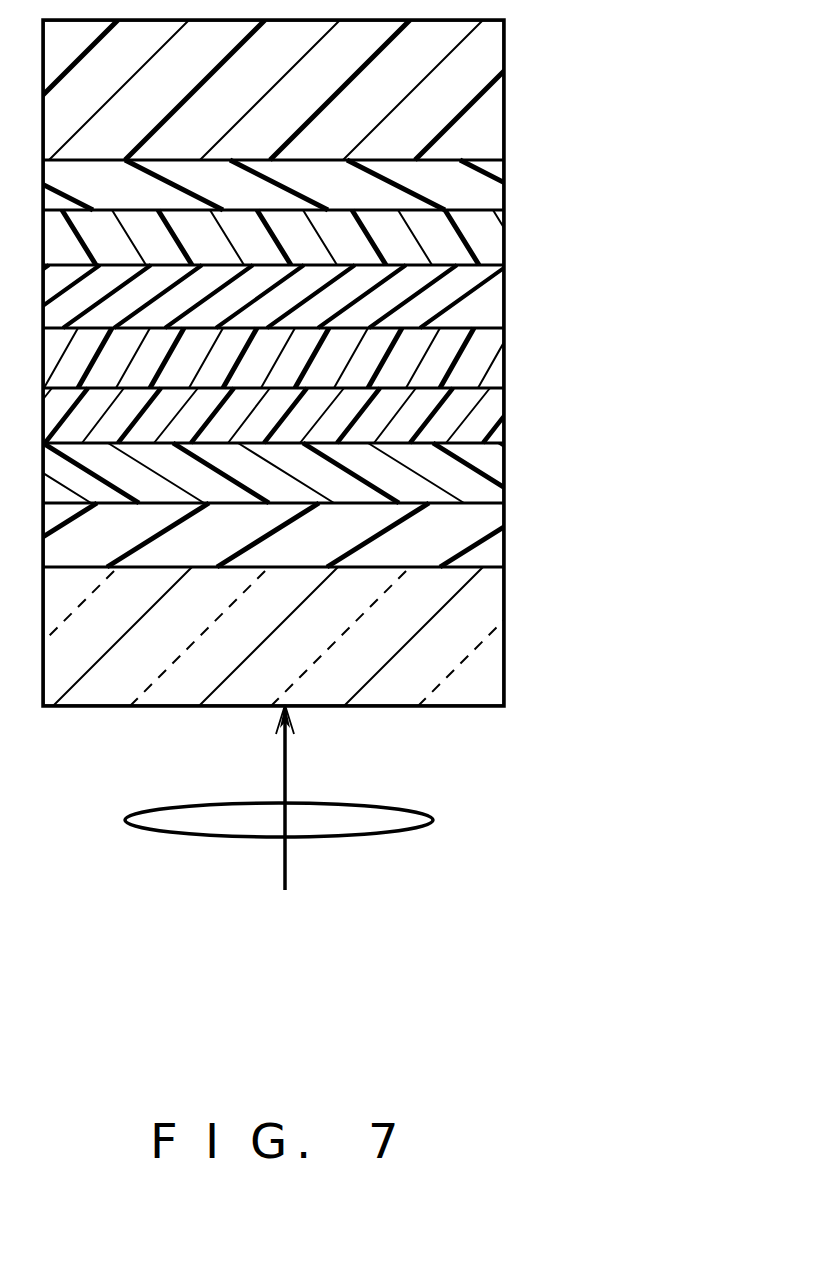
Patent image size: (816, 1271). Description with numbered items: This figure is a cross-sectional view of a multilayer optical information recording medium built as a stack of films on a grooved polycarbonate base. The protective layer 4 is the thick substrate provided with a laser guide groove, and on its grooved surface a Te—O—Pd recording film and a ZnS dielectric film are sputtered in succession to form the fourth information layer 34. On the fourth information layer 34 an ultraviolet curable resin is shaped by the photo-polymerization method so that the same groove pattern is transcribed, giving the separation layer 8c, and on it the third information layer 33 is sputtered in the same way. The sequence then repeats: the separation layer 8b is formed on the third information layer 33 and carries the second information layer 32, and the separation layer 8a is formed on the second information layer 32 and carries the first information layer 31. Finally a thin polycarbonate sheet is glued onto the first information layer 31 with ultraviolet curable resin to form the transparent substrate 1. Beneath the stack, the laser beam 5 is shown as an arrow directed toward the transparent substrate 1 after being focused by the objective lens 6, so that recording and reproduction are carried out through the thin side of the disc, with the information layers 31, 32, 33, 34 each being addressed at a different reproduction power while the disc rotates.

The transparent substrate 1 is at (505, 640).
The first information layer 31 is at (505, 518).
The separation layer 8a is at (505, 457).
The second information layer 32 is at (505, 403).
The separation layer 8b is at (505, 345).
The third information layer 33 is at (505, 288).
The separation layer 8c is at (505, 235).
The fourth information layer 34 is at (505, 180).
The protective layer 4 is at (505, 80).
The laser beam 5 is at (287, 863).
The objective lens 6 is at (433, 820).